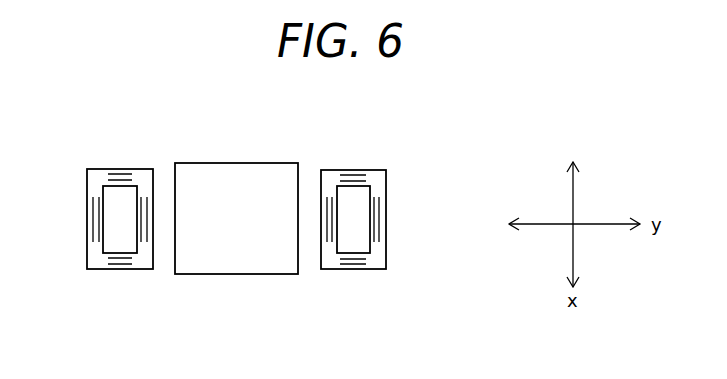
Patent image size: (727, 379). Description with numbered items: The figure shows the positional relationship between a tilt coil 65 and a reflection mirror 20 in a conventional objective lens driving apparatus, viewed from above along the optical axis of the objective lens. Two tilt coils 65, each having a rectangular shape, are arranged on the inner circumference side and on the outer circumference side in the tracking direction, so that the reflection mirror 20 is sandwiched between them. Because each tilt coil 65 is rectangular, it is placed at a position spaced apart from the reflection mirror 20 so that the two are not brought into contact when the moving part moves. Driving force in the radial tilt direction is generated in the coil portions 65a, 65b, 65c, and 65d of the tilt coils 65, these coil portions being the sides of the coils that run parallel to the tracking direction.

The reflection mirror 20 is at (237, 171).
The tilt coil 65 is at (94, 219).
The coil portion 65a is at (352, 174).
The coil portion 65b is at (353, 266).
The coil portion 65c is at (120, 173).
The coil portion 65d is at (121, 265).